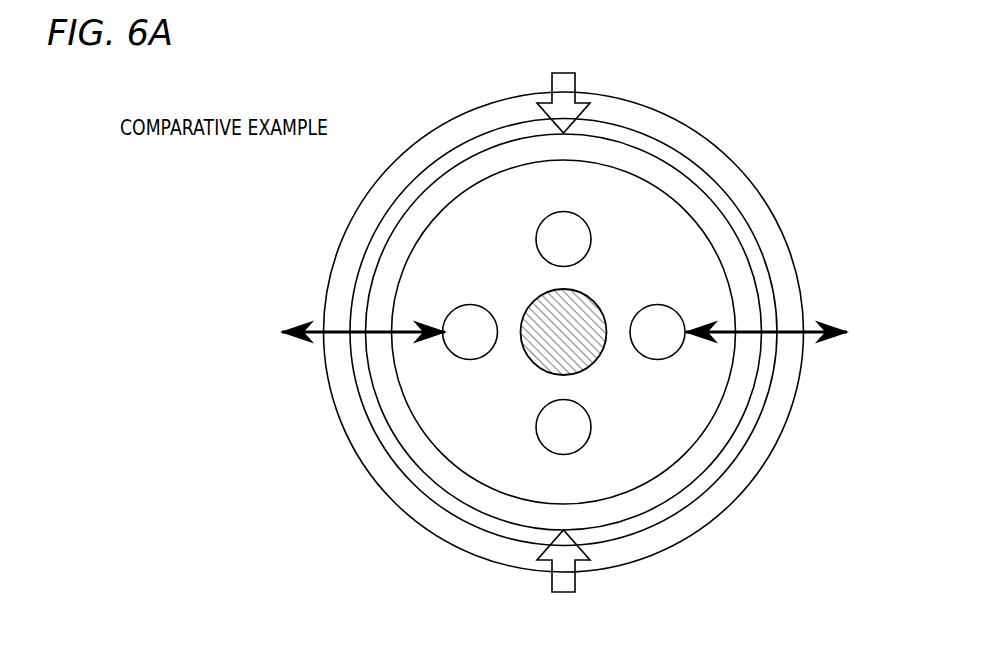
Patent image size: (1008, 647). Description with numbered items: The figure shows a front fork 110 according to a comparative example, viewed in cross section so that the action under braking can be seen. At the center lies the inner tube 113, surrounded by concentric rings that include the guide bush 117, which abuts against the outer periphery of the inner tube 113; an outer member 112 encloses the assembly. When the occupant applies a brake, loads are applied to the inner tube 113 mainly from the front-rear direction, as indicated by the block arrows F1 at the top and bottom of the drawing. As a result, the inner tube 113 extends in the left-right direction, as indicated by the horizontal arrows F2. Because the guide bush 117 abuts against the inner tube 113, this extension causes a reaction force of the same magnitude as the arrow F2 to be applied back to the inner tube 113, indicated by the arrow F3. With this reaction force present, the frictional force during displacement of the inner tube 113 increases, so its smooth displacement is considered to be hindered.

The front fork 110 is at (833, 139).
The outer ring 112 is at (388, 481).
The inner tube 113 is at (688, 193).
The guide bush 117 is at (714, 474).
The arrows F1 is at (563, 335).
The arrows F2 is at (793, 330).
The arrow F3 is at (747, 336).